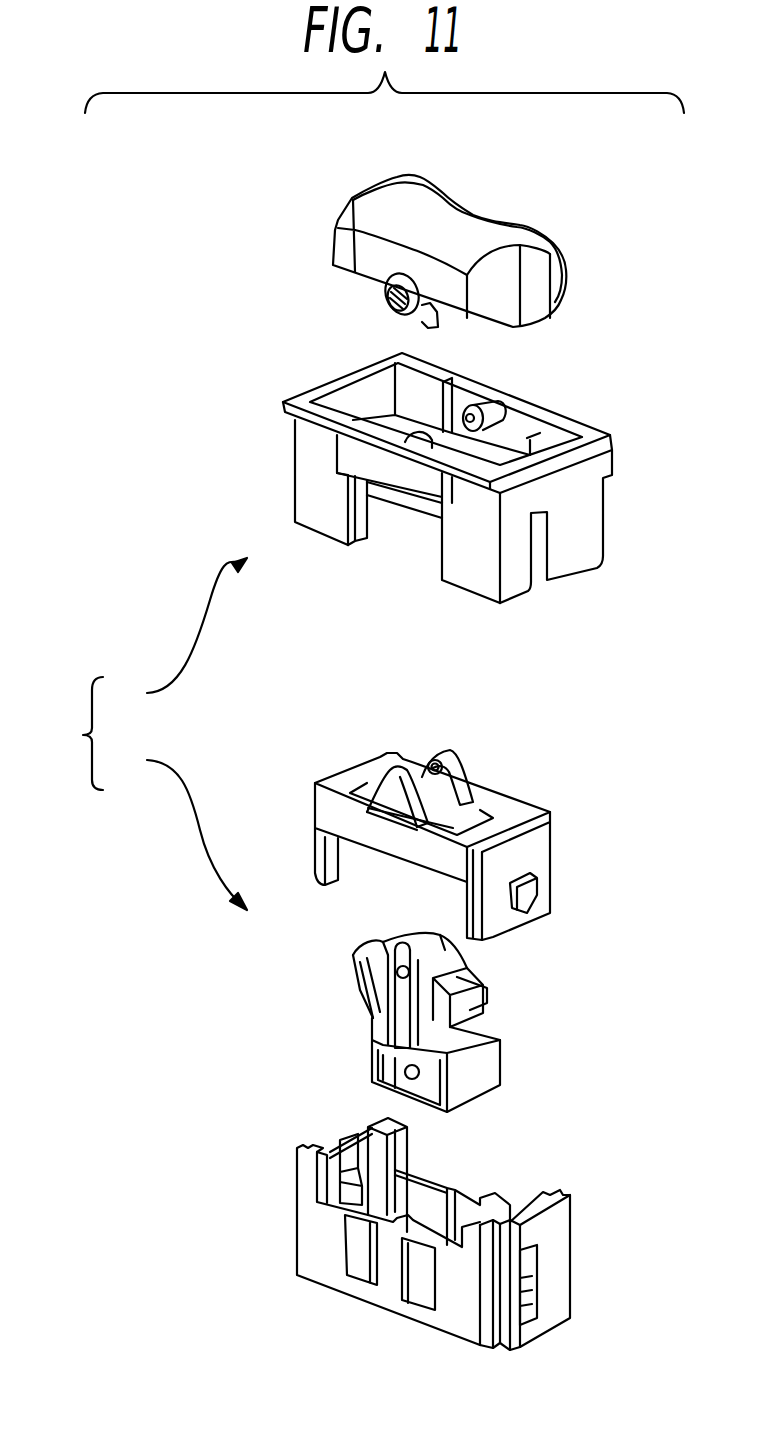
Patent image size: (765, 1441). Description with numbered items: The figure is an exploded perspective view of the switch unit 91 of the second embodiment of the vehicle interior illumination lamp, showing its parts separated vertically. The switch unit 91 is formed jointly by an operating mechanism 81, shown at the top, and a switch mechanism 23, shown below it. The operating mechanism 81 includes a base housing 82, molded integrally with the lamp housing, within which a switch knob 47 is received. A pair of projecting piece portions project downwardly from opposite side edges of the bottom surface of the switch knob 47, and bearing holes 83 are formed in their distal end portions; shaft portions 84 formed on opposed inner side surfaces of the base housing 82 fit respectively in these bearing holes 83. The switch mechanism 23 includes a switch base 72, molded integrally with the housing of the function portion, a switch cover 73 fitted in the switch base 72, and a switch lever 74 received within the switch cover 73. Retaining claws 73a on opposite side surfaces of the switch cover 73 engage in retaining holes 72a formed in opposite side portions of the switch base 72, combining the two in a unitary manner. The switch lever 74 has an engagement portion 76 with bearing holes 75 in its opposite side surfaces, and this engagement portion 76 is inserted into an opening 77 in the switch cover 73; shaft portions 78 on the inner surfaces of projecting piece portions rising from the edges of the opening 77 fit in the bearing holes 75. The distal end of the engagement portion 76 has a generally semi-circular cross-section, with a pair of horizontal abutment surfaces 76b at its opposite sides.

The switch knob 47 is at (347, 202).
The bearing holes 83 is at (386, 297).
The shaft portions 84 is at (490, 402).
The base housing 82 is at (295, 471).
The operating mechanism 81 is at (182, 634).
The switch unit 91 is at (78, 733).
The switch mechanism 23 is at (182, 832).
The switch cover 73 is at (315, 802).
The shaft portions 78 is at (430, 760).
The opening 77 is at (473, 812).
The retaining claws 73a is at (537, 887).
The engagement portion 76 is at (447, 960).
The abutment surfaces 76b is at (365, 940).
The bearing holes 75 is at (370, 995).
The switch lever 74 is at (512, 1068).
The switch base 72 is at (297, 1205).
The retaining holes 72a is at (522, 1293).